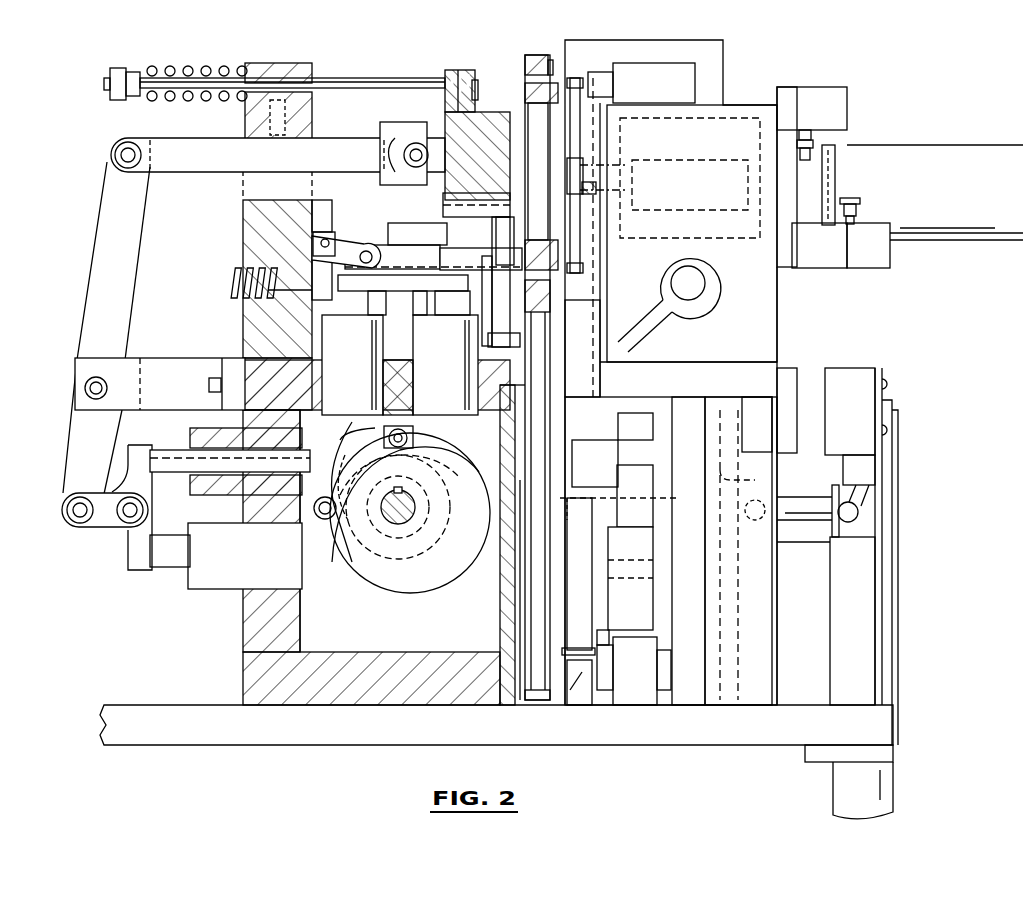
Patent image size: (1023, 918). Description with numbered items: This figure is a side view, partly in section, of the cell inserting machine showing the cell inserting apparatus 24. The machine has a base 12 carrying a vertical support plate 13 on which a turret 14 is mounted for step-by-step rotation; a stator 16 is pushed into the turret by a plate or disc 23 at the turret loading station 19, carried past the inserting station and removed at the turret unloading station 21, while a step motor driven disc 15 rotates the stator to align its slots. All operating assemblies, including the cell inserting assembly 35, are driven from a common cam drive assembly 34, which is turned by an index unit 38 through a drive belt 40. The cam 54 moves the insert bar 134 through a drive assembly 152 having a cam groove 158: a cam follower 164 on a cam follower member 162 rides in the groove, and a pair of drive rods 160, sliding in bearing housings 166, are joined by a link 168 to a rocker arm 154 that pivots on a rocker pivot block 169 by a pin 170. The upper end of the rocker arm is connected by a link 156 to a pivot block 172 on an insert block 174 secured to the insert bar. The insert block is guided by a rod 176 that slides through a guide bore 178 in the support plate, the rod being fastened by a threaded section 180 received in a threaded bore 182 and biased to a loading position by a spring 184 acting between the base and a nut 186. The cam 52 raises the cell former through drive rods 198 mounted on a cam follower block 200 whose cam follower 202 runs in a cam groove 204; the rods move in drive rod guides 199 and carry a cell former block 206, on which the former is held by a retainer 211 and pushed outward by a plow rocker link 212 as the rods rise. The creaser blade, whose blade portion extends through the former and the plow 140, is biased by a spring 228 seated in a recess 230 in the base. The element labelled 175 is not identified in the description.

The base 12 is at (885, 731).
The vertical support plate 13 is at (250, 214).
The turret 14 is at (538, 58).
The step motor driven disc 15 is at (585, 195).
The stator 16 is at (578, 660).
The turret loading station 19 is at (609, 640).
The turret unloading station 21 is at (516, 65).
The plate or disc 23 is at (645, 608).
The cell inserting apparatus 24 is at (110, 578).
The cam drive assembly 34 is at (450, 591).
The cell inserting assembly 35 is at (410, 218).
The index unit 38 is at (777, 295).
The drive belt 40 is at (668, 312).
The cam 52 is at (416, 437).
The cam 54 is at (372, 588).
The insert bar 134 is at (504, 212).
The plow 140 is at (512, 328).
The drive assembly 152 is at (213, 610).
The rocker arm 154 is at (95, 245).
The link 156 is at (180, 145).
The cam groove 158 is at (416, 544).
The drive rod 160 is at (176, 480).
The cam follower member 162 is at (325, 495).
The cam follower 164 is at (325, 520).
The bearing housing 166 is at (190, 428).
The link 168 is at (105, 525).
The rocker pivot block 169 is at (172, 365).
The pin 170 is at (84, 395).
The pivot block 172 is at (418, 140).
The insert block 174 is at (490, 118).
The pin 175 is at (460, 70).
The rod 176 is at (352, 76).
The guide bore 178 is at (288, 75).
The threaded section 180 is at (448, 72).
The threaded bore 182 is at (476, 82).
The spring 184 is at (158, 68).
The nut 186 is at (120, 66).
The drive rod 198 is at (352, 300).
The drive rod guide 199 is at (385, 348).
The cam follower block 200 is at (427, 440).
The cam follower 202 is at (436, 440).
The cam groove 204 is at (340, 440).
The cell former block 206 is at (448, 300).
The retainer 211 is at (388, 292).
The plow rocker link 212 is at (340, 248).
The spring 228 is at (272, 276).
The recess 230 is at (270, 290).